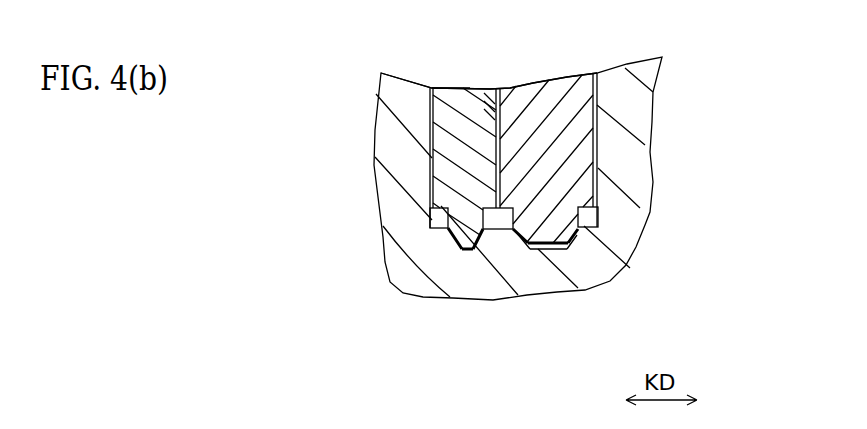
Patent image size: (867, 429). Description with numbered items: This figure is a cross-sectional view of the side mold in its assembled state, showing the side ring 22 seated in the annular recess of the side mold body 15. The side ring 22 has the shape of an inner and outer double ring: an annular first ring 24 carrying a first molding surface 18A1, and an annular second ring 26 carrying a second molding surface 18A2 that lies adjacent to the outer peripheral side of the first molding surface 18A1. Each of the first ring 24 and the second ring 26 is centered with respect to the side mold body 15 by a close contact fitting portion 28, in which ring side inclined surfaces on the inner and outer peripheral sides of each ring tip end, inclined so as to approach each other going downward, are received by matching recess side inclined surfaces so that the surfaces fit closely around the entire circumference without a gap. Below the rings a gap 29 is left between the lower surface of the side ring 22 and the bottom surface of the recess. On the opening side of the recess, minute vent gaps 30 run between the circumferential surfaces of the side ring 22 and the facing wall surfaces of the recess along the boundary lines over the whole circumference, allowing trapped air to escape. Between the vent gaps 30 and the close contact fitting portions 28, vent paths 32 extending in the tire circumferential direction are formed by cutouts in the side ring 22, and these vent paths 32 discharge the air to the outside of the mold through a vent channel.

The side mold body 15 is at (652, 125).
The first molding surface 18A1 is at (547, 75).
The second molding surface 18A2 is at (460, 90).
The side ring 22 is at (533, 80).
The first ring 24 is at (590, 79).
The second ring 26 is at (442, 88).
The close contact fitting portion 28 is at (462, 245).
The gap 29 is at (465, 247).
The vent gap 30 is at (490, 88).
The vent path 32 is at (432, 223).